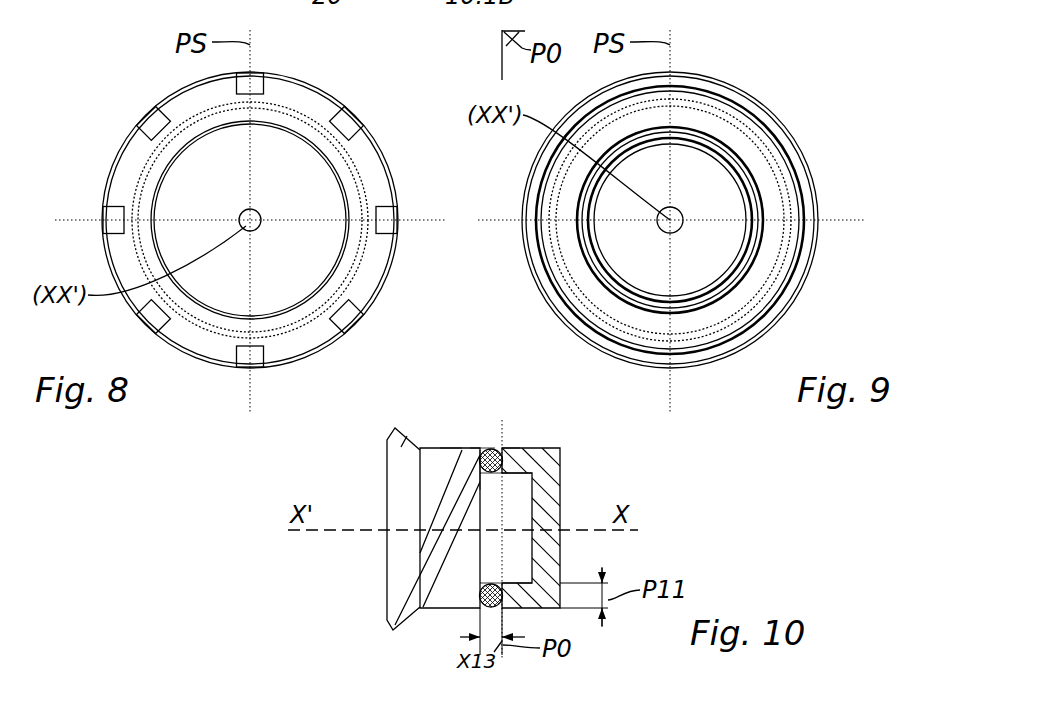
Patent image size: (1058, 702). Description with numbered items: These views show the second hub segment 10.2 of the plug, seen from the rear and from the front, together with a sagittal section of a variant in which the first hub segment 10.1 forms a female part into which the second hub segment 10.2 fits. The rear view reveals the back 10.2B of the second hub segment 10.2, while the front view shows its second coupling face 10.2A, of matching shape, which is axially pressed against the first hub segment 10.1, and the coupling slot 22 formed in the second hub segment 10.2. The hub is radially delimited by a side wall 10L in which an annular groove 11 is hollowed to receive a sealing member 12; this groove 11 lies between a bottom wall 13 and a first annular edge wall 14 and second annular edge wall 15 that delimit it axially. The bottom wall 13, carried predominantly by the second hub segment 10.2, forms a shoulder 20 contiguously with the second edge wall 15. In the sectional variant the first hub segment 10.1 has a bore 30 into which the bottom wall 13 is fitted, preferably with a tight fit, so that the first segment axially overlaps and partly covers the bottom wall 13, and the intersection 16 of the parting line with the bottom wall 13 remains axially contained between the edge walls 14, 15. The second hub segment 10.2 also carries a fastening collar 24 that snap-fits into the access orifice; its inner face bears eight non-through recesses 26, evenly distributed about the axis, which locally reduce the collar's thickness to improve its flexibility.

In FIG. 10, the first hub segment 10.1 is at (557, 455).
In FIG. 9, the second hub segment 10.2 is at (778, 82).
In FIG. 10, the second hub segment 10.2 is at (438, 593).
In FIG. 9, the second coupling face 10.2A is at (760, 262).
In FIG. 8, the back of the second hub segment 10.2B is at (357, 270).
In FIG. 10, the side wall 10L is at (450, 442).
In FIG. 10, the annular groove 11 is at (483, 442).
In FIG. 10, the sealing member 12 is at (490, 447).
In FIG. 10, the bottom wall 13 is at (488, 478).
In FIG. 10, the first annular edge wall 14 is at (510, 450).
In FIG. 9, the second annular edge wall 15 is at (803, 200).
In FIG. 10, the second annular edge wall 15 is at (473, 460).
In FIG. 10, the intersection 16 is at (507, 582).
In FIG. 9, the shoulder 20 is at (812, 238).
In FIG. 10, the shoulder 20 is at (473, 475).
In FIG. 9, the coupling slot 22 is at (742, 170).
In FIG. 8, the fastening collar 24 is at (313, 107).
In FIG. 9, the fastening collar 24 is at (772, 318).
In FIG. 10, the fastening collar 24 is at (395, 628).
In FIG. 8, the non-through recesses 26 is at (255, 82).
In FIG. 10, the bore 30 is at (527, 470).